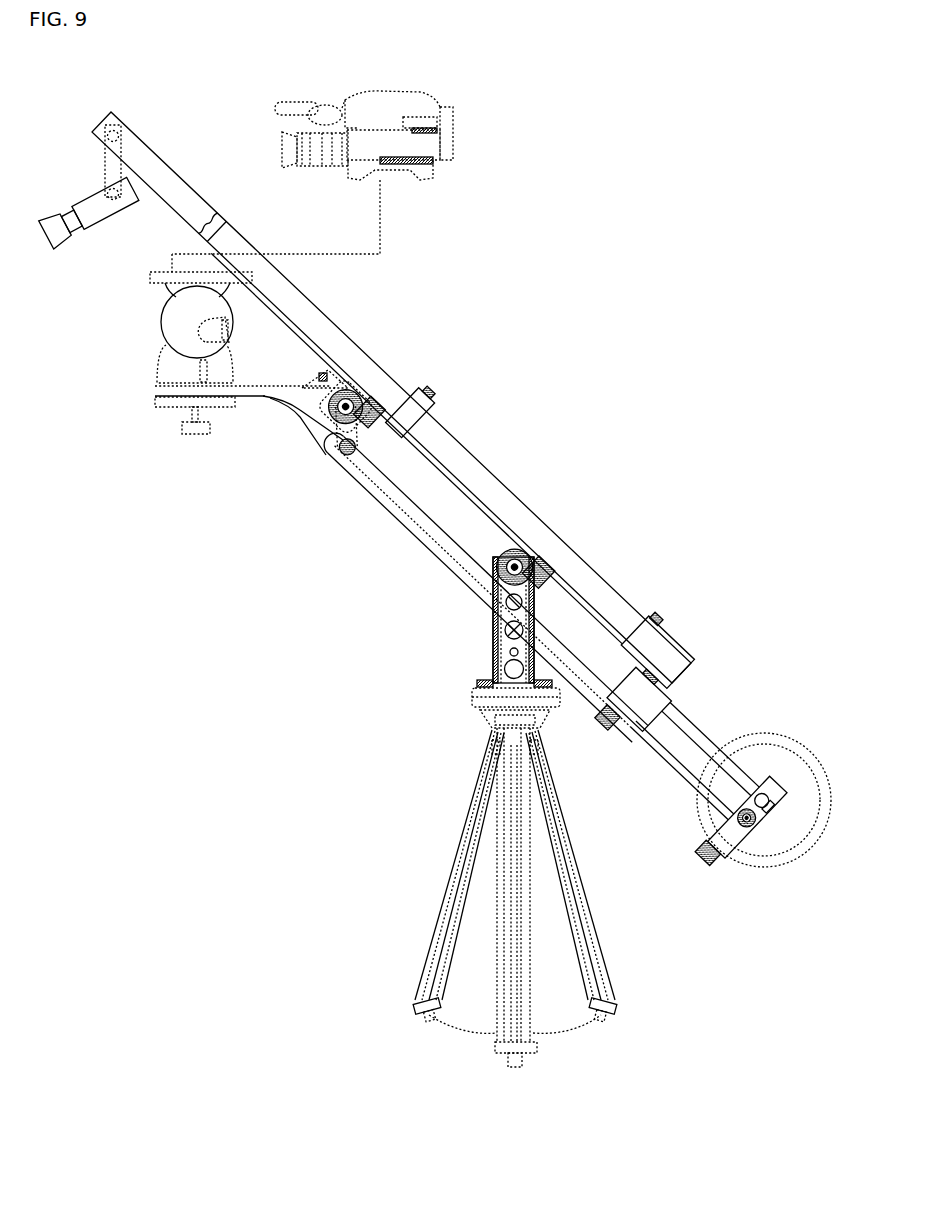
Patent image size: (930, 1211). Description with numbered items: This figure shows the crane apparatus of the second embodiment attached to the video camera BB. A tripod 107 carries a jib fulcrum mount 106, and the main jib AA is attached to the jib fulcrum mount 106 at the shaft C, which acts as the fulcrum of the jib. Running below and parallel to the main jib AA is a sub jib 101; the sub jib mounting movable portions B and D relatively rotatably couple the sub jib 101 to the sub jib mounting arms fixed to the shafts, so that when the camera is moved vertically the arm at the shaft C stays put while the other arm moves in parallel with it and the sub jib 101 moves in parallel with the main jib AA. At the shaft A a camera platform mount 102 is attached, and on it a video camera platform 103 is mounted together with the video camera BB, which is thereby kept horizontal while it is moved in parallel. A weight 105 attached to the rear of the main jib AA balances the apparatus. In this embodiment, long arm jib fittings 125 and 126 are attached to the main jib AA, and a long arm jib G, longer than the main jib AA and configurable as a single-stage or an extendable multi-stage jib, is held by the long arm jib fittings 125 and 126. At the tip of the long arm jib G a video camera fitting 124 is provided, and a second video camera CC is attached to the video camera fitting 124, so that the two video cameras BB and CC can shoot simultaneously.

The sub jib 101 is at (383, 483).
The camera platform mount 102 is at (155, 391).
The video camera platform 103 is at (165, 320).
The weight 105 is at (760, 862).
The jib fulcrum mount 106 is at (500, 653).
The tripod 107 is at (458, 874).
The video camera fitting 124 is at (110, 157).
The long arm jib fitting 125 is at (407, 408).
The long arm jib fitting 126 is at (623, 638).
The shaft A is at (345, 400).
The sub jib mounting movable portion B is at (343, 450).
The shaft C is at (518, 560).
The sub jib mounting movable portion D is at (511, 607).
The long arm jib G is at (482, 463).
The main jib AA is at (392, 519).
The video camera BB is at (423, 100).
The video camera CC is at (88, 197).